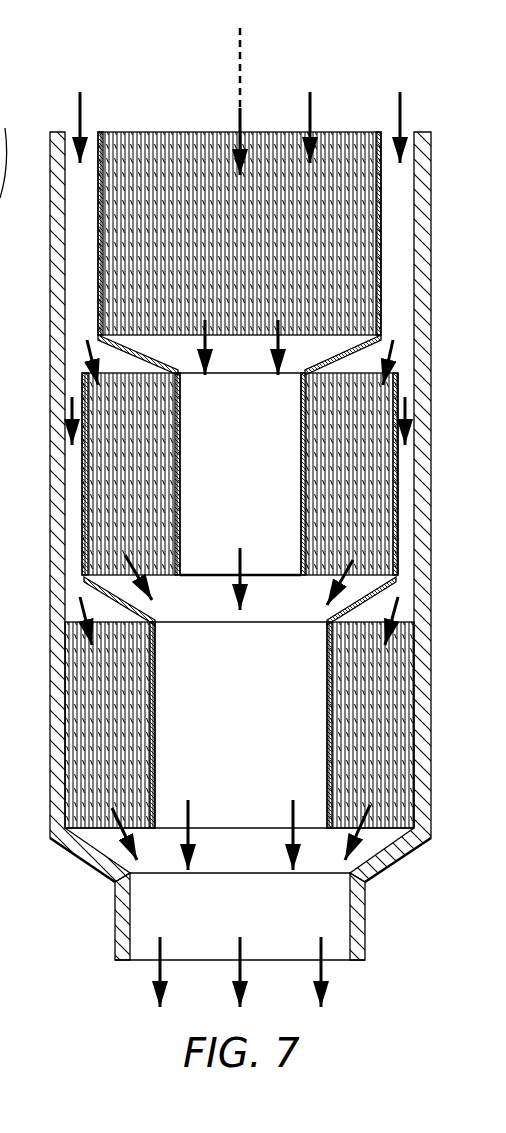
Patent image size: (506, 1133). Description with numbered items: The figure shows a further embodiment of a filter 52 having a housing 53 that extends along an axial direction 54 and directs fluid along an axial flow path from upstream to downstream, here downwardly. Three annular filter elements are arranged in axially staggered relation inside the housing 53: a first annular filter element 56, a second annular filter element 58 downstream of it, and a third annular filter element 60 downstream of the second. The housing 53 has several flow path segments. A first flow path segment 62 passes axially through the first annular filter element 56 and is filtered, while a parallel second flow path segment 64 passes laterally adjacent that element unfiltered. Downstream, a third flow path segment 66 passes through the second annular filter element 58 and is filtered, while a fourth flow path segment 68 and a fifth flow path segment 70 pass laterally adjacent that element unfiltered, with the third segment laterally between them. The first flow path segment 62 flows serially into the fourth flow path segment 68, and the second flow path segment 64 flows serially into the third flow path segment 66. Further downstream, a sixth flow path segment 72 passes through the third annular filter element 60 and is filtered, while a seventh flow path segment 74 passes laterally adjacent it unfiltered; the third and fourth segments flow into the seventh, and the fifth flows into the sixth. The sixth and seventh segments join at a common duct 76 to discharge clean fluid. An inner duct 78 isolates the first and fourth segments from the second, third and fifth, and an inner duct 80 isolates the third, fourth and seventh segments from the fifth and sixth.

The filter 52 is at (139, 88).
The housing 53 is at (50, 485).
The axial direction 54 is at (248, 58).
The first annular filter element 56 is at (117, 204).
The second annular filter element 58 is at (95, 527).
The third annular filter element 60 is at (88, 692).
The first flow path segment 62 is at (312, 110).
The second flow path segment 64 is at (78, 110).
The third flow path segment 66 is at (88, 355).
The fourth flow path segment 68 is at (248, 566).
The fifth flow path segment 70 is at (72, 408).
The sixth flow path segment 72 is at (82, 613).
The seventh flow path segment 74 is at (293, 806).
The common duct 76 is at (333, 910).
The inner duct 78 is at (135, 346).
The inner duct 80 is at (138, 600).